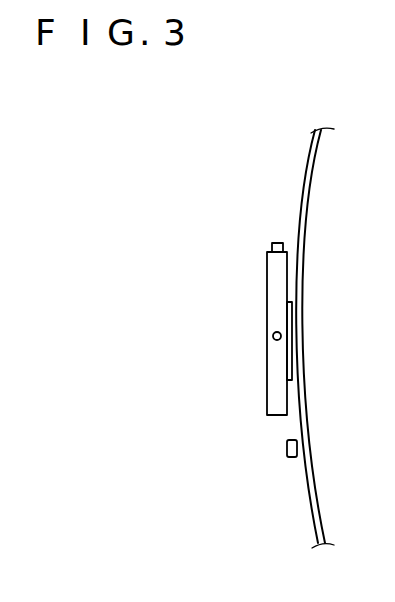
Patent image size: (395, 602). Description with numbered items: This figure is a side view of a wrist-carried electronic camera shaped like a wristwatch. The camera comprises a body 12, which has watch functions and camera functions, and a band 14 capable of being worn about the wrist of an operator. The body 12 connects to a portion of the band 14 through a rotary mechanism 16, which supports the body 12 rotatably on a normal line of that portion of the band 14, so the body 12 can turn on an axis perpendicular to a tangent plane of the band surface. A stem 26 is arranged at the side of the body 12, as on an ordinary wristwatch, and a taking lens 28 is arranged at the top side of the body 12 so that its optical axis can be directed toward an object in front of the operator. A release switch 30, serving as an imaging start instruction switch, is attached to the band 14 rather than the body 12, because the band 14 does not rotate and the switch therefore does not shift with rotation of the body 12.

The body 12 is at (268, 393).
The band 14 is at (310, 523).
The rotary mechanism 16 is at (289, 380).
The stem 26 is at (273, 336).
The taking lens 28 is at (277, 243).
The release switch 30 is at (287, 448).